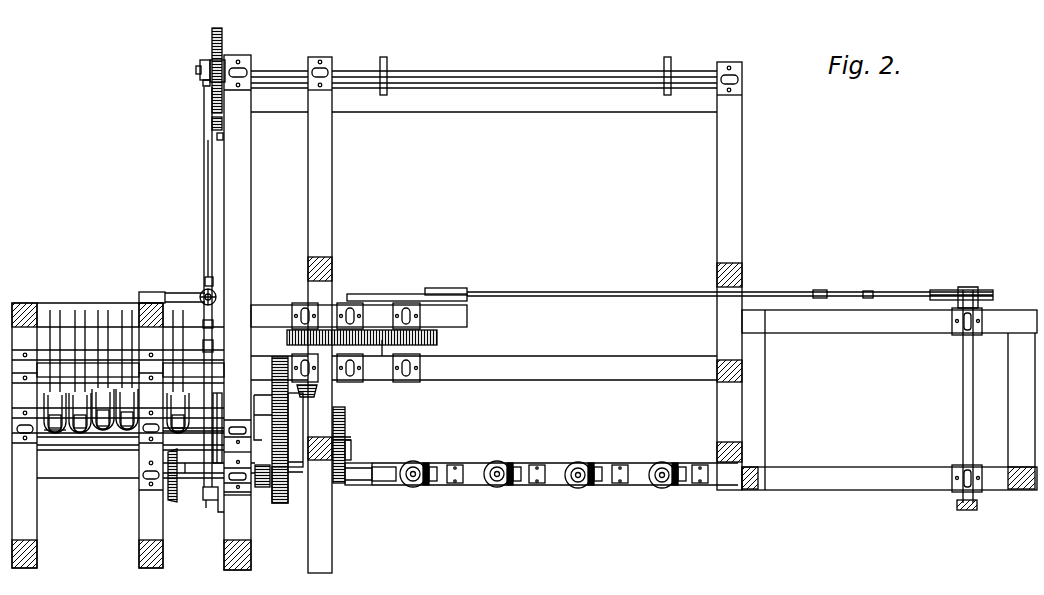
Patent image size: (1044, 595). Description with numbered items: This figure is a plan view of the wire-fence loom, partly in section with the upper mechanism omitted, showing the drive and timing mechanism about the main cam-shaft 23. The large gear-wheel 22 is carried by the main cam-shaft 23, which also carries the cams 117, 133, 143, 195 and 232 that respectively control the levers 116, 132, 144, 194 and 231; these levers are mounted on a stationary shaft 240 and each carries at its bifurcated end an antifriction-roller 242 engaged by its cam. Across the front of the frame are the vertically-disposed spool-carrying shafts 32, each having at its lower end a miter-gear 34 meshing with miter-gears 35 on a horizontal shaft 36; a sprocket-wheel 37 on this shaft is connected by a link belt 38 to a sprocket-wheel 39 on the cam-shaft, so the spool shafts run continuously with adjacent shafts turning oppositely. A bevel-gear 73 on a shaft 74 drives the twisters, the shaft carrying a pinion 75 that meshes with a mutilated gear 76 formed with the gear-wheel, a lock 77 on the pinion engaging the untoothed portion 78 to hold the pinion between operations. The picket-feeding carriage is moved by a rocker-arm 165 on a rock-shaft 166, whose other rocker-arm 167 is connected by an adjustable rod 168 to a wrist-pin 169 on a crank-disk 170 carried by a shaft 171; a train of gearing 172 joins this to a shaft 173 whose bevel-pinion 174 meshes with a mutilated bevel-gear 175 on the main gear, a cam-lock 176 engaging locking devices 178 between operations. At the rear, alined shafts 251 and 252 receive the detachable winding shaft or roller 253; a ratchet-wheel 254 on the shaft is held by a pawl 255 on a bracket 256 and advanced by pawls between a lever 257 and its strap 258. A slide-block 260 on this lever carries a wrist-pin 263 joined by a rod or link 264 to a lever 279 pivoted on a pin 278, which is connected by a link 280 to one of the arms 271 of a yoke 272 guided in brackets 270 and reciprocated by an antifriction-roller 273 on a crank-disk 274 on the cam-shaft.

The gear-wheel 22 is at (275, 503).
The main cam-shaft 23 is at (349, 437).
The spool-carrying shafts 32 is at (663, 462).
The miter-gear 34 is at (496, 482).
The miter-gears 35 is at (514, 483).
The horizontal shaft 36 is at (465, 476).
The sprocket-wheel 37 is at (343, 485).
The link belt 38 is at (351, 457).
The sprocket-wheel 39 is at (345, 411).
The bevel-gear 73 is at (173, 500).
The shaft 74 is at (203, 492).
The pinion 75 is at (260, 488).
The mutilated gear 76 is at (250, 455).
The lock 77 is at (246, 492).
The untoothed portion 78 is at (258, 440).
The lever 116 is at (178, 312).
The cam 117 is at (204, 462).
The lever 132 is at (103, 312).
The cam 133 is at (102, 428).
The cam 143 is at (127, 434).
The lever 144 is at (140, 298).
The rocker-arm 165 is at (962, 510).
The rock-shaft 166 is at (973, 388).
The rocker-arm 167 is at (975, 296).
The adjustable rod 168 is at (650, 290).
The wrist-pin 169 is at (430, 290).
The crank-disk 170 is at (387, 296).
The shaft 171 is at (418, 350).
The train of gearing 172 is at (382, 345).
The shaft 173 is at (290, 340).
The bevel-pinion 174 is at (318, 392).
The mutilated bevel-gear 175 is at (293, 470).
The cam-lock 176 is at (273, 374).
The locking devices 178 is at (298, 421).
The lever 194 is at (80, 312).
The cam 195 is at (80, 428).
The lever 231 is at (55, 312).
The cam 232 is at (55, 437).
The stationary shaft 240 is at (47, 370).
The antifriction-roller 242 is at (45, 440).
The shaft 251 is at (373, 70).
The shaft 252 is at (681, 75).
The winding shaft or roller 253 is at (470, 77).
The ratchet-wheel 254 is at (222, 33).
The pawl 255 is at (225, 122).
The bracket 256 is at (222, 137).
The lever 257 is at (205, 80).
The strap 258 is at (222, 70).
The slide-block 260 is at (201, 62).
The wrist-pin 263 is at (197, 70).
The rod or link 264 is at (205, 173).
The brackets 270 is at (219, 510).
The arms 271 is at (208, 503).
The yoke 272 is at (205, 475).
The antifriction-roller 273 is at (218, 395).
The crank-disk 274 is at (219, 410).
The pin 278 is at (172, 295).
The lever 279 is at (216, 297).
The link 280 is at (213, 343).